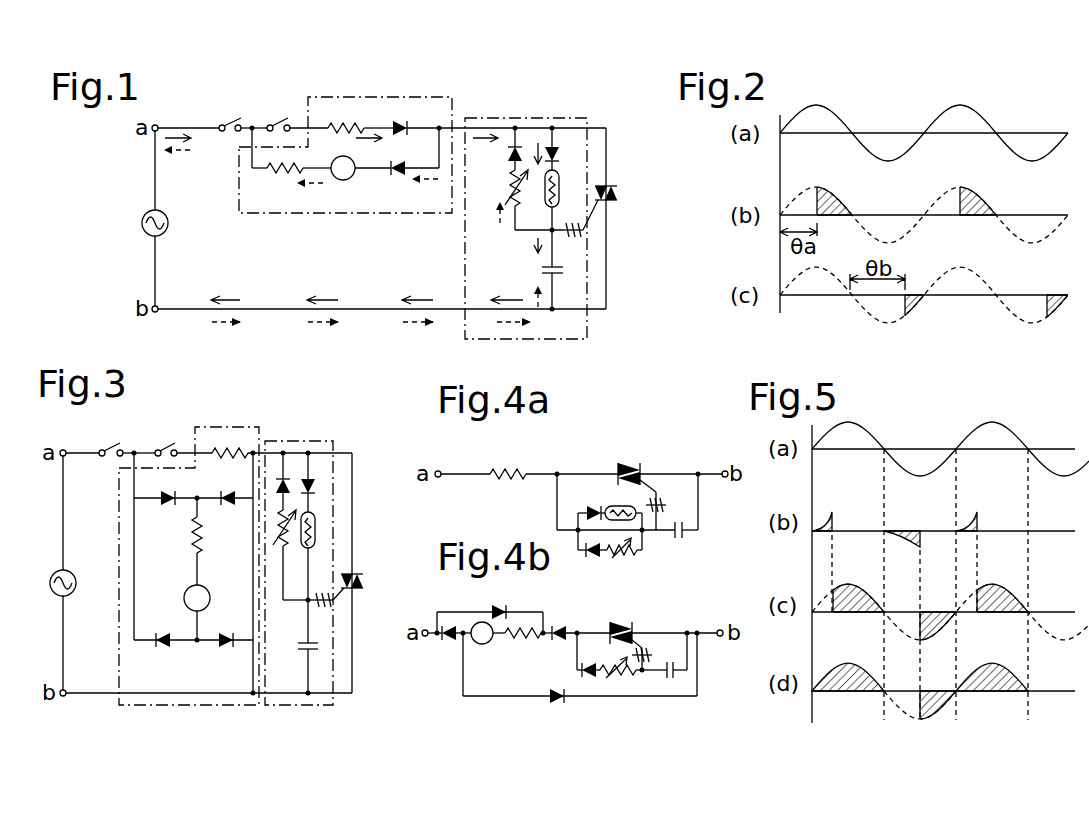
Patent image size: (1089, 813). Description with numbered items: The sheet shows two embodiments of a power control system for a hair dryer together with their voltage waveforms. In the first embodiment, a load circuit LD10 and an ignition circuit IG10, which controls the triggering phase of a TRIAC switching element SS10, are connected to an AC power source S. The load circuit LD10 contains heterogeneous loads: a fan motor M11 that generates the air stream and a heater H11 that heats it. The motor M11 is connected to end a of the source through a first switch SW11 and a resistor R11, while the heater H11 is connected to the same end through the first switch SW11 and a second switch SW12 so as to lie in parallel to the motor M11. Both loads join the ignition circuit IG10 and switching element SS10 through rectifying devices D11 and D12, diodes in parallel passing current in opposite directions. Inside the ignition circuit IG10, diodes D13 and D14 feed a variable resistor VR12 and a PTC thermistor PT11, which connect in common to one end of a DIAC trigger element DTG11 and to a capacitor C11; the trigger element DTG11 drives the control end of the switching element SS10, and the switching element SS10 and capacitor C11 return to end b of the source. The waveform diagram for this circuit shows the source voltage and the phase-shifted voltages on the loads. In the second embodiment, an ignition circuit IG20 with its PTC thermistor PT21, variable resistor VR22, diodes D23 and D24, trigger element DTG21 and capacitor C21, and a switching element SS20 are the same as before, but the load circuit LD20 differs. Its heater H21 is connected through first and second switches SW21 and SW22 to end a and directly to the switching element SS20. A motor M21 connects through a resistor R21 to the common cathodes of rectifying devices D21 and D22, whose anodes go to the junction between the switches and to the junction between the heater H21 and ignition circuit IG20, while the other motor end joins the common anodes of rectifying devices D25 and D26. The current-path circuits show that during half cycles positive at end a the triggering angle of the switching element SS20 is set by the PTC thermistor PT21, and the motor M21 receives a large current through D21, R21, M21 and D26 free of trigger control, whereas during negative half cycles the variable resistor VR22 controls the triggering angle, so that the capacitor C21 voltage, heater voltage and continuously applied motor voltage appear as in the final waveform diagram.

In FIG. 1, the AC power source S is at (145, 223).
In FIG. 3, the AC power source S is at (68, 577).
In FIG. 1, the first switch SW11 is at (230, 119).
In FIG. 1, the second switch SW12 is at (279, 121).
In FIG. 1, the heater H11 is at (348, 126).
In FIG. 1, the rectifying device D11 is at (399, 177).
In FIG. 1, the rectifying device D12 is at (400, 120).
In FIG. 1, the rectifying device D13 is at (512, 146).
In FIG. 1, the rectifying device D14 is at (561, 153).
In FIG. 1, the resistor R11 is at (291, 172).
In FIG. 1, the fan motor M11 is at (341, 180).
In FIG. 1, the load circuit LD10 is at (432, 97).
In FIG. 1, the ignition circuit IG10 is at (548, 118).
In FIG. 1, the PTC thermistor PT11 is at (560, 185).
In FIG. 1, the variable resistor VR12 is at (504, 186).
In FIG. 1, the switching element SS10 is at (618, 193).
In FIG. 1, the trigger element DTG11 is at (581, 234).
In FIG. 1, the capacitor C11 is at (565, 269).
In FIG. 3, the first switch SW21 is at (105, 448).
In FIG. 3, the second switch SW22 is at (169, 447).
In FIG. 3, the heater H21 is at (222, 447).
In FIG. 4A, the heater H21 is at (500, 470).
In FIG. 3, the rectifying device D21 is at (165, 513).
In FIG. 4B, the rectifying device D21 is at (500, 598).
In FIG. 3, the rectifying device D22 is at (235, 513).
In FIG. 4B, the rectifying device D22 is at (555, 626).
In FIG. 3, the rectifying device D23 is at (290, 480).
In FIG. 4A, the rectifying device D23 is at (593, 558).
In FIG. 4B, the rectifying device D23 is at (590, 678).
In FIG. 3, the rectifying device D24 is at (315, 488).
In FIG. 4A, the rectifying device D24 is at (583, 512).
In FIG. 3, the rectifying device D25 is at (170, 655).
In FIG. 4B, the rectifying device D25 is at (450, 640).
In FIG. 3, the rectifying device D26 is at (230, 655).
In FIG. 4B, the rectifying device D26 is at (558, 709).
In FIG. 3, the resistor R21 is at (220, 539).
In FIG. 4B, the resistor R21 is at (526, 649).
In FIG. 3, the motor M21 is at (184, 598).
In FIG. 4B, the motor M21 is at (482, 644).
In FIG. 3, the load circuit LD20 is at (246, 427).
In FIG. 3, the ignition circuit IG20 is at (300, 441).
In FIG. 3, the PTC thermistor PT21 is at (318, 530).
In FIG. 4A, the PTC thermistor PT21 is at (610, 506).
In FIG. 3, the variable resistor VR22 is at (293, 525).
In FIG. 4A, the variable resistor VR22 is at (622, 556).
In FIG. 4B, the variable resistor VR22 is at (620, 678).
In FIG. 3, the switching element SS20 is at (377, 585).
In FIG. 4A, the switching element SS20 is at (628, 464).
In FIG. 4B, the switching element SS20 is at (626, 622).
In FIG. 3, the trigger element DTG21 is at (330, 607).
In FIG. 4A, the trigger element DTG21 is at (663, 500).
In FIG. 4B, the trigger element DTG21 is at (652, 652).
In FIG. 3, the capacitor C21 is at (298, 649).
In FIG. 4A, the capacitor C21 is at (683, 535).
In FIG. 4B, the capacitor C21 is at (677, 673).